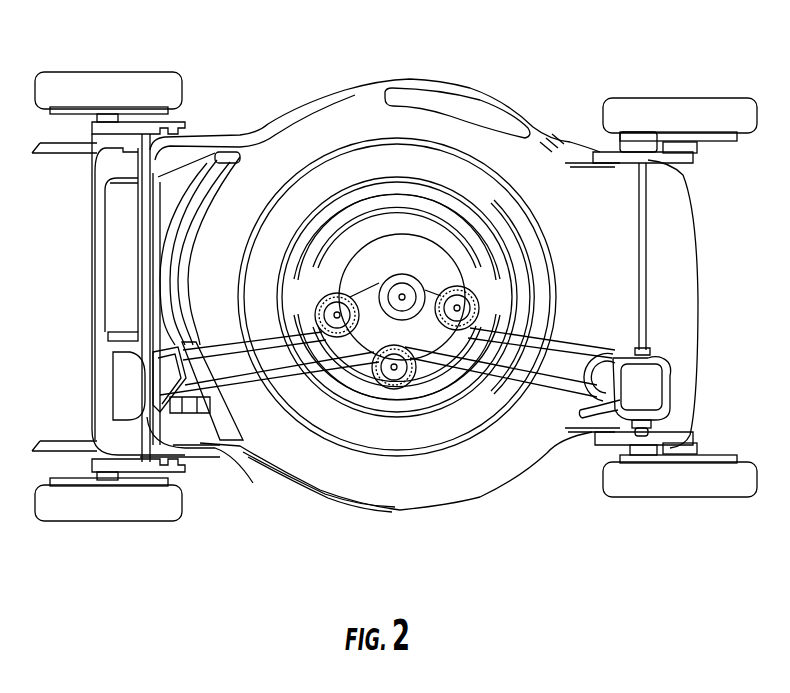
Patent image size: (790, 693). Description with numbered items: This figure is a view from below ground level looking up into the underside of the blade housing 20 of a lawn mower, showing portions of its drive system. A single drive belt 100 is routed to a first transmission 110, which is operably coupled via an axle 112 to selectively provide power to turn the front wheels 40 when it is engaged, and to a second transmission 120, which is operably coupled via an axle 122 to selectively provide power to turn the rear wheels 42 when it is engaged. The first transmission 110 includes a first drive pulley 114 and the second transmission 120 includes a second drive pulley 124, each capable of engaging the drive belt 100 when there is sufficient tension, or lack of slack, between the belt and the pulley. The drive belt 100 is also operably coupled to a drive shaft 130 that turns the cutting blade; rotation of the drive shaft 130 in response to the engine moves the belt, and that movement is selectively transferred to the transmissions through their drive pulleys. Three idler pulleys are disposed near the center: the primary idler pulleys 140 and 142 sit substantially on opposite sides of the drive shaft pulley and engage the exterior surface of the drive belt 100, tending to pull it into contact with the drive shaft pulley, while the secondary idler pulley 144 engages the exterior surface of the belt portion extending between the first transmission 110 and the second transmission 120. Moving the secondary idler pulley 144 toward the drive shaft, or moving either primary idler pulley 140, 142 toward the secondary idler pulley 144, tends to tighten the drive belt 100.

The blade housing 20 is at (435, 493).
The front wheels 40 is at (661, 68).
The rear wheels 42 is at (105, 55).
The drive belt 100 is at (276, 345).
The first transmission 110 is at (650, 386).
The axle 112 is at (647, 243).
The first drive pulley 114 is at (622, 357).
The second transmission 120 is at (128, 385).
The axle 122 is at (137, 242).
The second drive pulley 124 is at (226, 396).
The drive shaft 130 is at (402, 292).
The primary idler pulley 140 is at (336, 293).
The primary idler pulley 142 is at (465, 290).
The secondary idler pulley 144 is at (396, 376).